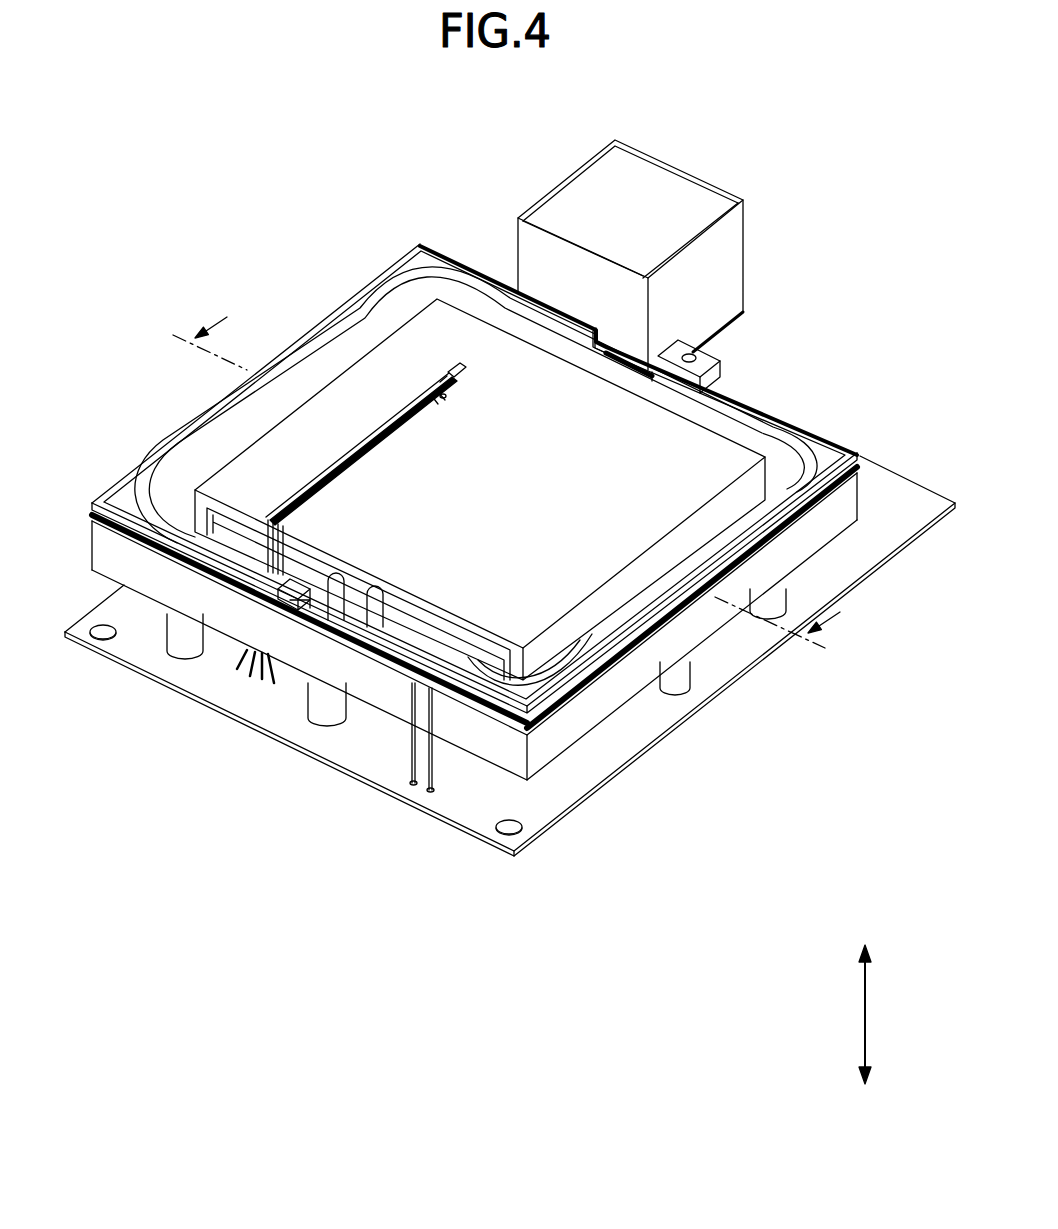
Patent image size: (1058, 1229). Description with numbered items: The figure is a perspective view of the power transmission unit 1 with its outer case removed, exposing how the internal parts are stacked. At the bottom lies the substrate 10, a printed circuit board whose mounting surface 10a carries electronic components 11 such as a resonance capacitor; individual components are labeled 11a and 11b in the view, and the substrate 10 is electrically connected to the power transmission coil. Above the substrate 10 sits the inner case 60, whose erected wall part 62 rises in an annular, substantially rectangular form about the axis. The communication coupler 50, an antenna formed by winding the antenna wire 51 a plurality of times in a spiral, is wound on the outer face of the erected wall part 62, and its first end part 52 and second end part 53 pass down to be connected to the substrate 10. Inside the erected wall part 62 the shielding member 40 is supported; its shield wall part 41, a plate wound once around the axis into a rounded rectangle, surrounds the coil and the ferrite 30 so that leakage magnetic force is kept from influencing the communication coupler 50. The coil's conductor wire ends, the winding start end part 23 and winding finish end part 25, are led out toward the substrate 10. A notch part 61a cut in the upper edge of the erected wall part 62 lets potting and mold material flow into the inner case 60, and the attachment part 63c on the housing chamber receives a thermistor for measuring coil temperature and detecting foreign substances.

The power transmission unit 1 is at (391, 184).
The substrate 10 is at (510, 659).
The mounting surface 10a is at (547, 797).
The electronic components 11 is at (504, 345).
The motor body 11a is at (668, 181).
The flexible wiring strip 11b is at (415, 390).
The winding start end part 23 is at (352, 616).
The winding finish end part 25 is at (312, 601).
The ferrite 30 is at (235, 542).
The shielding member 40 is at (474, 486).
The shield wall part 41 is at (740, 432).
The communication coupler 50 is at (474, 647).
The antenna wire 51 is at (607, 676).
The first end part 52 is at (432, 780).
The second end part 53 is at (412, 770).
The inner case 60 is at (487, 410).
The notch part 61a is at (630, 362).
The erected wall part 62 is at (170, 442).
The attachment part 63c is at (447, 370).